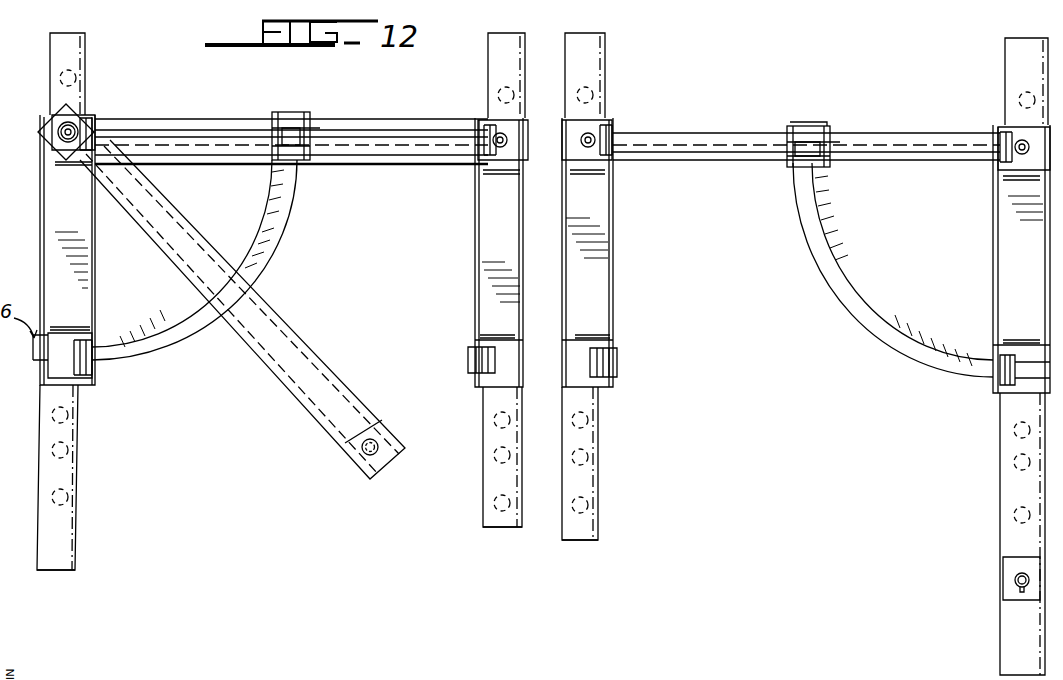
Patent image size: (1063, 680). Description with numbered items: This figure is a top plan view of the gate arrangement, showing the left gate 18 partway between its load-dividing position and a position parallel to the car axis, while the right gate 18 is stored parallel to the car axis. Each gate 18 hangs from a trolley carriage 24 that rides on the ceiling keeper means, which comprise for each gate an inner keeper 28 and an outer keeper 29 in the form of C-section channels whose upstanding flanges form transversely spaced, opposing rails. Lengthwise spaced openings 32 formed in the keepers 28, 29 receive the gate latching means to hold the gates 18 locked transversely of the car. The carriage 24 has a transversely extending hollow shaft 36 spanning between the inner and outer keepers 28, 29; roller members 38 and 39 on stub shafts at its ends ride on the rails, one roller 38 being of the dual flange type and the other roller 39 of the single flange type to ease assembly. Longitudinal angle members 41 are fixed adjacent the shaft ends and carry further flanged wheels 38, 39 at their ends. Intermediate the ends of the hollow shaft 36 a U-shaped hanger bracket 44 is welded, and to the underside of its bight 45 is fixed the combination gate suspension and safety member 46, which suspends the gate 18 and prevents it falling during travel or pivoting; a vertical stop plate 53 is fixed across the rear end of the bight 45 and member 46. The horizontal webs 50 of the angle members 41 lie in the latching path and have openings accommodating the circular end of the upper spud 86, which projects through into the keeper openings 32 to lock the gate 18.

The gate 18 is at (410, 173).
The trolley carriage 24 is at (426, 127).
The inner keeper 28 is at (560, 520).
The outer keeper 29 is at (85, 524).
The openings 32 is at (68, 450).
The hollow shaft 36 is at (376, 126).
The roller member 38 is at (88, 120).
The roller member 39 is at (484, 158).
The angle members 41 is at (93, 278).
The hanger bracket 44 is at (312, 128).
The bight 45 is at (288, 121).
The combination gate suspension and safety member 46 is at (203, 333).
The horizontal webs 50 is at (58, 272).
The vertical stop plate 53 is at (293, 114).
The upper spud 86 is at (58, 136).